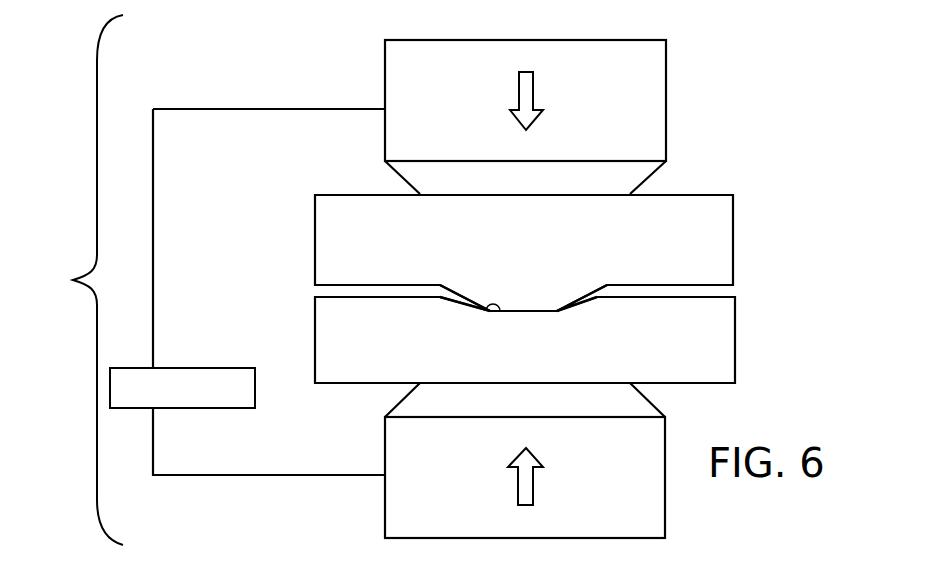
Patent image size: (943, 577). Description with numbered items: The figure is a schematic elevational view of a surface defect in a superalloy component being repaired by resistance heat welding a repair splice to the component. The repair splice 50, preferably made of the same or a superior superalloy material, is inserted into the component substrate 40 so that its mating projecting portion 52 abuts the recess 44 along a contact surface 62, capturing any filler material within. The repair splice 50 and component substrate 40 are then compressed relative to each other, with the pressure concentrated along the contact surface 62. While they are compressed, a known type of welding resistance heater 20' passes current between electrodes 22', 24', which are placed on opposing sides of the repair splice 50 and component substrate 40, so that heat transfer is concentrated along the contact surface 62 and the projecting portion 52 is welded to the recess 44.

The welding resistance heater 20' is at (207, 280).
The electrode 22' is at (578, 117).
The electrode 24' is at (472, 463).
The repair splice 50 is at (749, 235).
The component substrate 40 is at (746, 335).
The projecting portion 52 is at (559, 306).
The contact surface 62 is at (537, 311).
The recess 44 is at (482, 308).